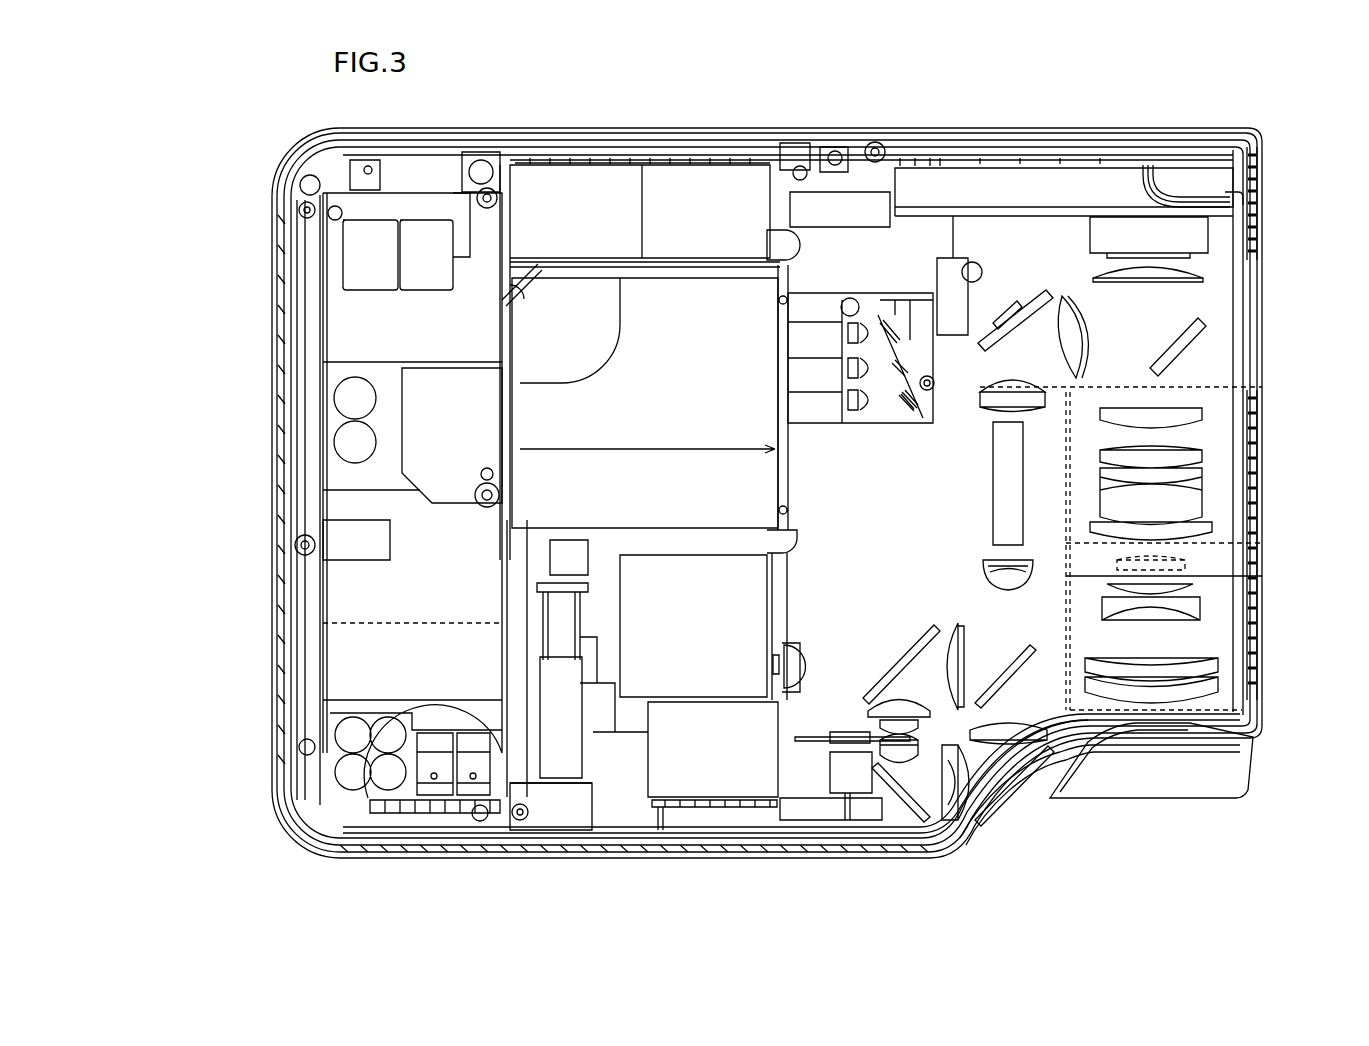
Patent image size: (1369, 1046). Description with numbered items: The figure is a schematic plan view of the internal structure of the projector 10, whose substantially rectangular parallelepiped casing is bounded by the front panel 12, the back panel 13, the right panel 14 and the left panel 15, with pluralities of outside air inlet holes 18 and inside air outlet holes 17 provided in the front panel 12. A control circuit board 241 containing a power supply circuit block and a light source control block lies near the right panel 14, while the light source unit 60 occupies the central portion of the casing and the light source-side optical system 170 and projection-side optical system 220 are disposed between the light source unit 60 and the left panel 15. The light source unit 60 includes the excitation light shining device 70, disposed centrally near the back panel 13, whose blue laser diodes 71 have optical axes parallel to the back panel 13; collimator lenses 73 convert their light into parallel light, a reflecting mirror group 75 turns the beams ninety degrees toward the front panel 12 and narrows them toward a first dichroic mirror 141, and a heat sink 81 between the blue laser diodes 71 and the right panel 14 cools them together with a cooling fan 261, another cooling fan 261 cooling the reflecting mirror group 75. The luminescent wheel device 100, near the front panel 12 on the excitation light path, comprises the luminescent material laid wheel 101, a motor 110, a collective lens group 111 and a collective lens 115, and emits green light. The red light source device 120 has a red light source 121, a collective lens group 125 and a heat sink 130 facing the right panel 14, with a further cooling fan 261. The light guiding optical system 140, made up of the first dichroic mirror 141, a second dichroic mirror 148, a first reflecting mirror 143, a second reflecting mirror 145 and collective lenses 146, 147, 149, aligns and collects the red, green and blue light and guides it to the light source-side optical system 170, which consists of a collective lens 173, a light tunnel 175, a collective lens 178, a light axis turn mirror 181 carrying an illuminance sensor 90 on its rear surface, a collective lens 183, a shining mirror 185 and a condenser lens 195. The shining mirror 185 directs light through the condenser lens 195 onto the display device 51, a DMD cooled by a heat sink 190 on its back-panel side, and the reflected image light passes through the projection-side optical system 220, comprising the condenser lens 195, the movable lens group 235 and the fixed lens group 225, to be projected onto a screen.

The projector 10 is at (1284, 119).
The front panel 12 is at (430, 852).
The back panel 13 is at (632, 165).
The right panel 14 is at (282, 353).
The left panel 15 is at (1262, 668).
The inside air outlet holes 17 is at (300, 390).
The outside air inlet holes 18 is at (590, 128).
The display device 51 is at (1185, 255).
The light source unit 60 is at (502, 448).
The excitation light shining device 70 is at (815, 273).
The blue laser diodes 71 is at (846, 404).
The collimator lenses 73 is at (846, 368).
The reflecting mirror group 75 is at (900, 410).
The heat sink 81 is at (680, 362).
The illuminance sensor 90 is at (1003, 325).
The luminescent wheel device 100 is at (847, 780).
The luminescent material laid wheel 101 is at (810, 745).
The motor 110 is at (845, 793).
The collective lens group 111 is at (960, 815).
The collective lens 115 is at (941, 770).
The red light source device 120 is at (760, 700).
The red light source 121 is at (773, 665).
The collective lens group 125 is at (786, 631).
The heat sink 130 is at (655, 623).
The light guiding optical system 140 is at (1062, 735).
The first dichroic mirror 141 is at (895, 668).
The first reflecting mirror 143 is at (905, 760).
The second reflecting mirror 145 is at (1012, 780).
The collective lens 146 is at (963, 801).
The collective lens 147 is at (1025, 722).
The second dichroic mirror 148 is at (1005, 670).
The collective lens 149 is at (955, 620).
The light source-side optical system 170 is at (1041, 239).
The collective lens 173 is at (1120, 577).
The light tunnel 175 is at (1110, 547).
The collective lens 178 is at (1045, 387).
The light axis turn mirror 181 is at (1022, 320).
The collective lens 183 is at (1085, 314).
The shining mirror 185 is at (1186, 346).
The heat sink 190 is at (1118, 180).
The condenser lens 195 is at (1178, 278).
The projection-side optical system 220 is at (1220, 503).
The fixed lens group 225 is at (1191, 697).
The movable lens group 235 is at (1220, 436).
The control circuit board 241 is at (392, 570).
The cooling fan 261 is at (535, 205).